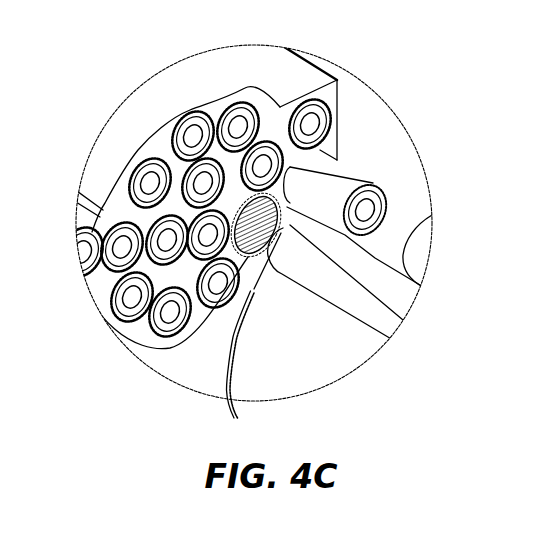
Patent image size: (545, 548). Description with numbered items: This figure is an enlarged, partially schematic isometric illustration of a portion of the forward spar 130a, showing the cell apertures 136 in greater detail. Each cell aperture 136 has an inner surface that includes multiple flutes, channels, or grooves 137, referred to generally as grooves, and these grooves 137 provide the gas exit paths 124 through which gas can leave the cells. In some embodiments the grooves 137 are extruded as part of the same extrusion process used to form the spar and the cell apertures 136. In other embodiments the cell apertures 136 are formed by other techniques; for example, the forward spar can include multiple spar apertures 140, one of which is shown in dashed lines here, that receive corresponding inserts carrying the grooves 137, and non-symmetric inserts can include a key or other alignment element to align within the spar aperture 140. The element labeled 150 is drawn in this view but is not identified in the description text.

The forward spar 130a is at (145, 103).
The spar aperture 140 is at (345, 112).
The roller 150 is at (374, 277).
The gas exit path 124 is at (403, 320).
The cell aperture 136 is at (287, 233).
The grooves 137 is at (249, 338).